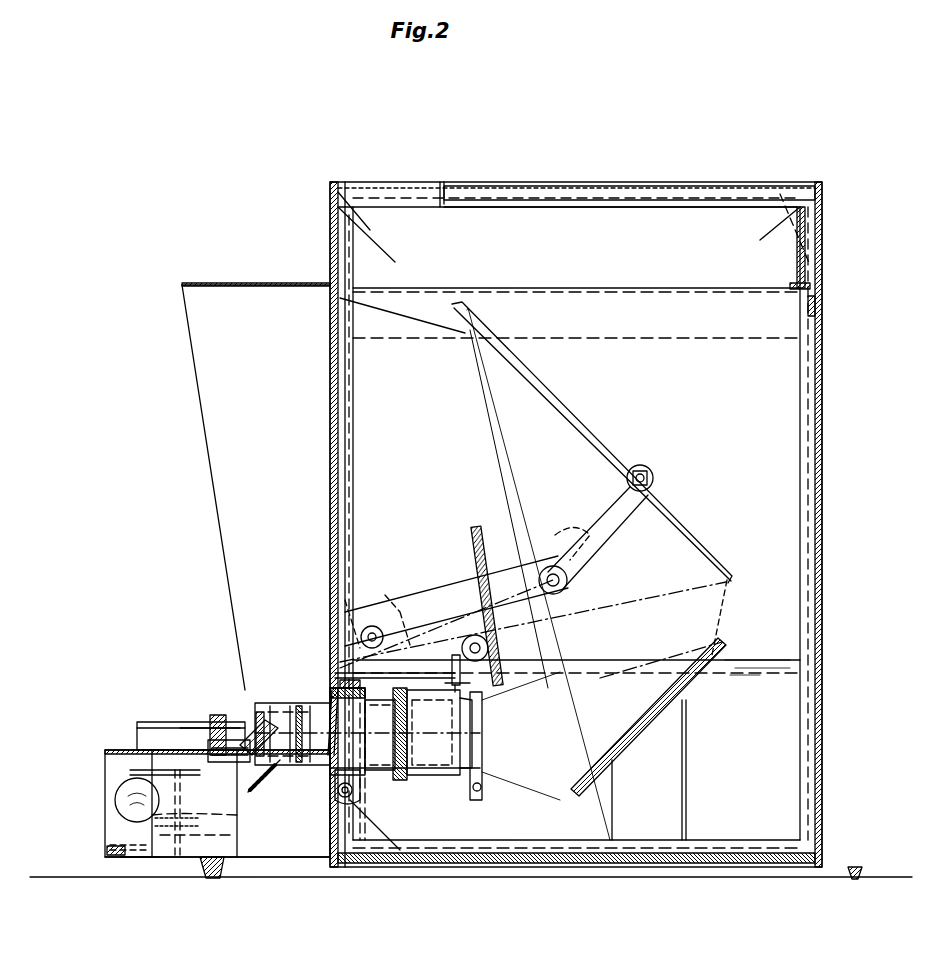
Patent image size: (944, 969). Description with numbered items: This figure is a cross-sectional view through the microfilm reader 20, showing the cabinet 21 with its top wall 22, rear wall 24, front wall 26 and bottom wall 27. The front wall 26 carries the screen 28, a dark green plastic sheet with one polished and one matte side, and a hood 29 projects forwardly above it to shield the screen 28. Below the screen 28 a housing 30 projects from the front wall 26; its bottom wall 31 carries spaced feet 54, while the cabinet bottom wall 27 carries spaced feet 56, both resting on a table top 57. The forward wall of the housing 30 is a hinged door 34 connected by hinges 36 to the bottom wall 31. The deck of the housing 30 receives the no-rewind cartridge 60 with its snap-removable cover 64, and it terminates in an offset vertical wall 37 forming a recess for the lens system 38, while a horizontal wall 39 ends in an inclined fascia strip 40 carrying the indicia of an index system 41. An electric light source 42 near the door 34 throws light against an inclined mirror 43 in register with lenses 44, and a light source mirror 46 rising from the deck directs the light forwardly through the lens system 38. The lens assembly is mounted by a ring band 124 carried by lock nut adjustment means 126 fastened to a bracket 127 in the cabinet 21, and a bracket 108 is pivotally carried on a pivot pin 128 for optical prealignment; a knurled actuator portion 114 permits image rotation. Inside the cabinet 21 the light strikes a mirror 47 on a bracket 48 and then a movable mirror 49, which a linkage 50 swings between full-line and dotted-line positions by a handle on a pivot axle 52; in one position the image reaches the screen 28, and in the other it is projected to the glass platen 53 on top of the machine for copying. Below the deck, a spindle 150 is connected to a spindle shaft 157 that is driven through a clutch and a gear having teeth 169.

The reader 20 is at (655, 172).
The cabinet 21 is at (338, 182).
The top wall 22 is at (575, 183).
The rear wall 24 is at (822, 215).
The front wall 26 is at (335, 232).
The bottom wall 27 is at (577, 862).
The screen 28 is at (345, 400).
The hood 29 is at (200, 317).
The housing 30 is at (255, 862).
The bottom wall 31 is at (152, 870).
The hinged door 34 is at (105, 770).
The hinges 36 is at (105, 853).
The vertically extending wall 37 is at (270, 703).
The lens system 38 is at (320, 775).
The horizontally extending wall 39 is at (295, 705).
The fascia strip 40 is at (333, 688).
The index system 41 is at (340, 680).
The electric light source 42 is at (115, 800).
The mirror 43 is at (270, 790).
The lenses 44 is at (315, 760).
The light source mirror 46 is at (230, 715).
The mirror 47 is at (650, 722).
The bracket 48 is at (686, 780).
The movable mirror 49 is at (552, 415).
The linkage 50 is at (400, 608).
The pivot axle 52 is at (475, 635).
The glass platen 53 is at (610, 203).
The feet 54 is at (212, 876).
The feet 56 is at (762, 880).
The table top 57 is at (452, 880).
The cartridge 60 is at (148, 715).
The cover 64 is at (155, 722).
The bracket 108 is at (362, 772).
The knurled actuator portion 114 is at (330, 690).
The ring band 124 is at (490, 700).
The lock nut adjustment means 126 is at (522, 660).
The bracket 127 is at (452, 662).
The pivot pin 128 is at (352, 792).
The spindle 150 is at (185, 728).
The spindle shaft 157 is at (170, 830).
The teeth 169 is at (150, 822).